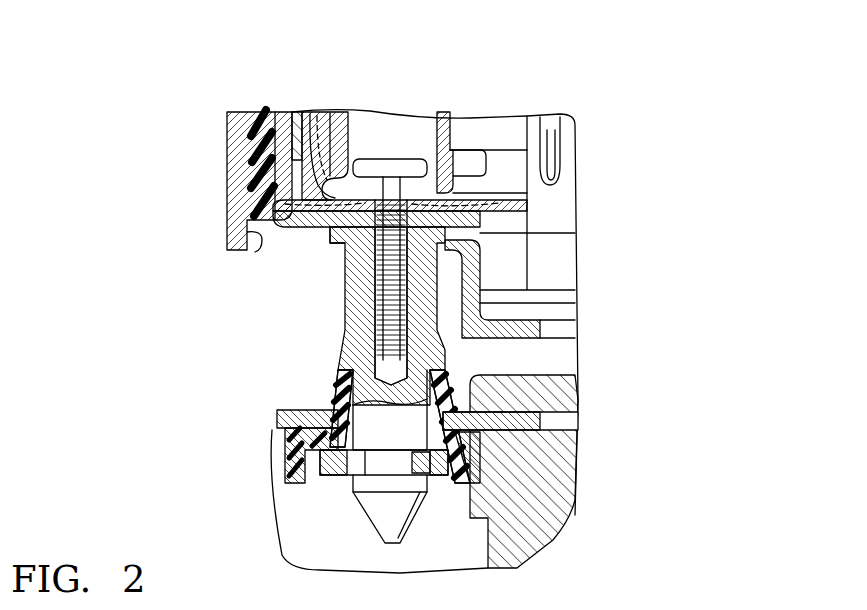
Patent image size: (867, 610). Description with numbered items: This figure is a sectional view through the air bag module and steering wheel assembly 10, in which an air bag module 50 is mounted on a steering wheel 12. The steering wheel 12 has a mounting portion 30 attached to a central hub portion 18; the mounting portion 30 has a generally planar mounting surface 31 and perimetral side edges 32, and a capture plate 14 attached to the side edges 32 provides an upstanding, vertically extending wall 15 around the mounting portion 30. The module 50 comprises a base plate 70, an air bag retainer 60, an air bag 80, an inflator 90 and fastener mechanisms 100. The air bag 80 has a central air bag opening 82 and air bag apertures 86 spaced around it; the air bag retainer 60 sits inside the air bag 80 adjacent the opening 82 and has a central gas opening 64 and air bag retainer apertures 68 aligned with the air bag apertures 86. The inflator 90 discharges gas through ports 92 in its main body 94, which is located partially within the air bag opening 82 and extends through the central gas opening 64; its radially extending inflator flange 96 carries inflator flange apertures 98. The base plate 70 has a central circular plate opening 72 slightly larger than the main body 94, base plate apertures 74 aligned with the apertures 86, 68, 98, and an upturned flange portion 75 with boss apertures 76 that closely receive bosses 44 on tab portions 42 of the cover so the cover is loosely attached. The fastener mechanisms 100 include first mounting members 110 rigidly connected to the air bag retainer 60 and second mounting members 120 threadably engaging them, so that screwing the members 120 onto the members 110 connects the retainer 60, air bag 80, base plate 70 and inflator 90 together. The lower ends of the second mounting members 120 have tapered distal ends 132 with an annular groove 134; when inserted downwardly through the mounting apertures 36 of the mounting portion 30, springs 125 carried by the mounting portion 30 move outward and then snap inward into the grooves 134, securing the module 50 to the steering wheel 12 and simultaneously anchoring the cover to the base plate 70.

The air bag module and steering wheel assembly 10 is at (570, 100).
The steering wheel 12 is at (590, 452).
The capture plate 14 is at (240, 192).
The vertically extending wall 15 is at (255, 259).
The central hub portion 18 is at (563, 487).
The mounting portion 30 is at (280, 418).
The mounting surface 31 is at (290, 410).
The perimetral side edges 32 is at (286, 429).
The mounting apertures 36 is at (347, 440).
The tab portions 42 is at (256, 112).
The bosses 44 is at (286, 167).
The air bag module 50 is at (580, 150).
The air bag retainer 60 is at (350, 128).
The central gas opening 64 is at (470, 168).
The air bag retainer apertures 68 is at (364, 203).
The base plate 70 is at (287, 225).
The central circular plate opening 72 is at (515, 208).
The base plate apertures 74 is at (500, 236).
The flange portion 75 is at (282, 112).
The boss apertures 76 is at (296, 112).
The air bag 80 is at (315, 126).
The central air bag opening 82 is at (490, 198).
The air bag apertures 86 is at (403, 200).
The inflator 90 is at (572, 266).
The ports 92 is at (557, 135).
The main body 94 is at (575, 184).
The inflator flange 96 is at (336, 236).
The inflator flange apertures 98 is at (357, 245).
The fastener mechanisms 100 is at (345, 371).
The first mounting members 110 is at (410, 162).
The second mounting members 120 is at (375, 318).
The springs 125 is at (442, 472).
The tapered distal ends 132 is at (390, 533).
The annular groove 134 is at (370, 460).